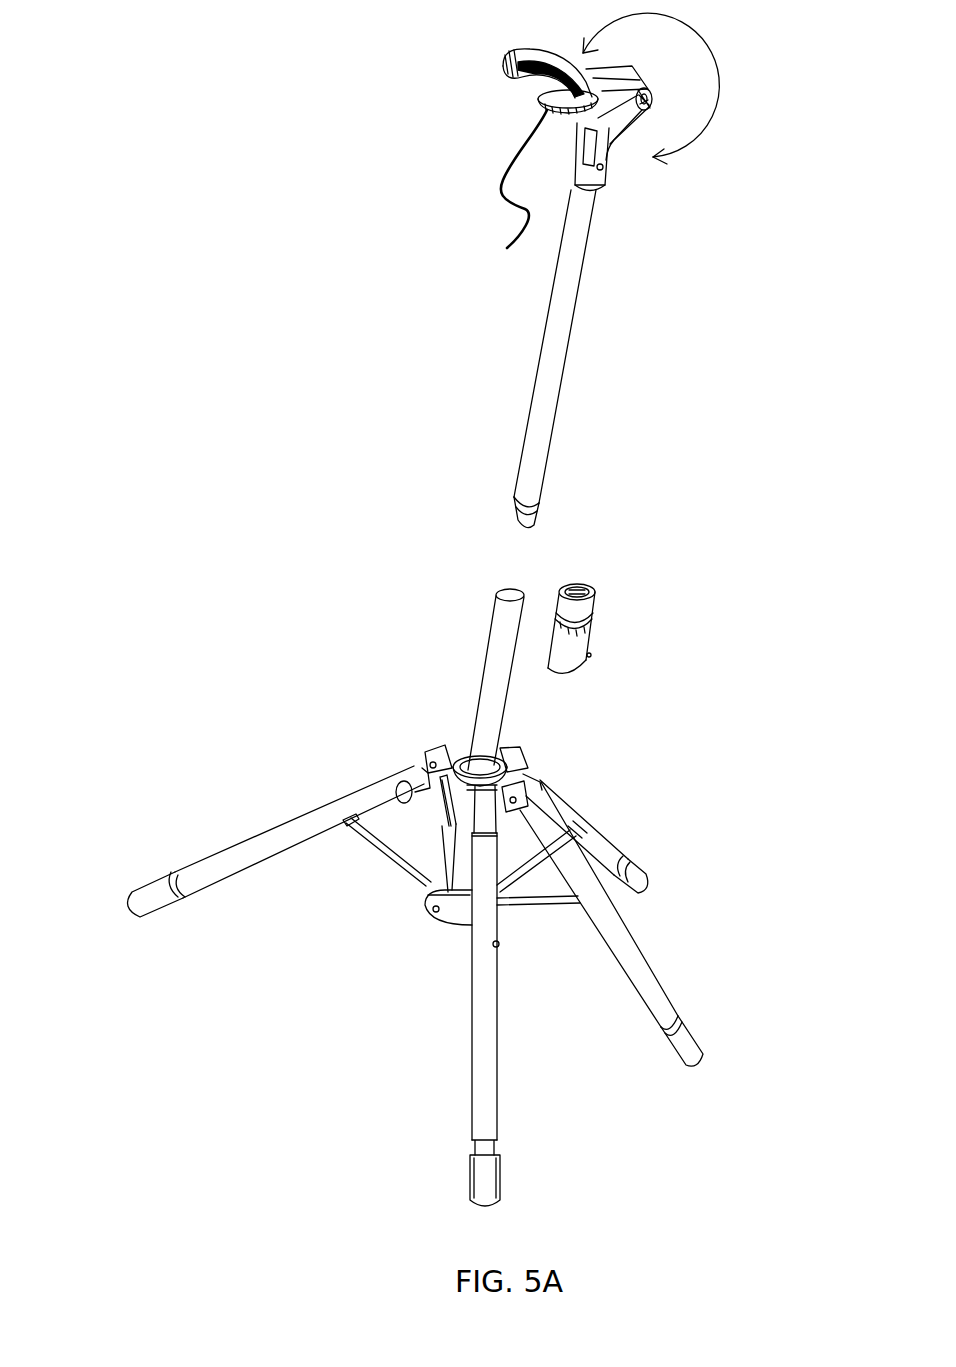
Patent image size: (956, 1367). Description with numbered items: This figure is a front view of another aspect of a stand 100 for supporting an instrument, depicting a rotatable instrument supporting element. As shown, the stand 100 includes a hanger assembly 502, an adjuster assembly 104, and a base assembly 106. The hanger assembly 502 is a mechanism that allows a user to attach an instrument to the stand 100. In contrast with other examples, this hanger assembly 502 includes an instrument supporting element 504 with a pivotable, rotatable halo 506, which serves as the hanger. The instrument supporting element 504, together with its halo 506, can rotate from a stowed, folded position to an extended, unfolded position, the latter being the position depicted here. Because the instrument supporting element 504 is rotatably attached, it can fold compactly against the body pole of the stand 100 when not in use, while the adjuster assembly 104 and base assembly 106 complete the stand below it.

The stand 100 is at (124, 50).
The hanger assembly 502 is at (607, 188).
The instrument supporting element 504 is at (497, 28).
The halo 506 is at (509, 210).
The adjuster assembly 104 is at (603, 626).
The base assembly 106 is at (537, 769).